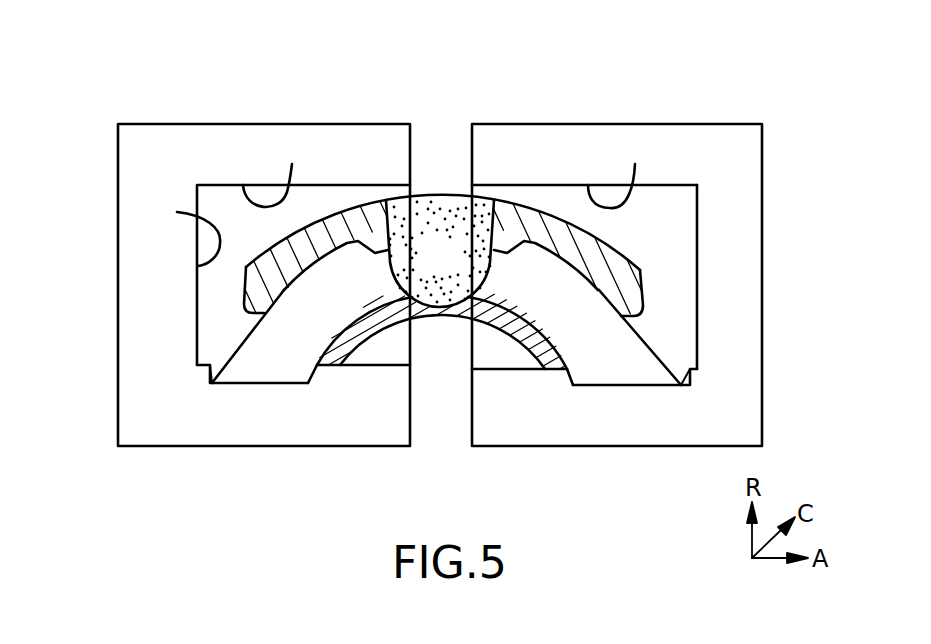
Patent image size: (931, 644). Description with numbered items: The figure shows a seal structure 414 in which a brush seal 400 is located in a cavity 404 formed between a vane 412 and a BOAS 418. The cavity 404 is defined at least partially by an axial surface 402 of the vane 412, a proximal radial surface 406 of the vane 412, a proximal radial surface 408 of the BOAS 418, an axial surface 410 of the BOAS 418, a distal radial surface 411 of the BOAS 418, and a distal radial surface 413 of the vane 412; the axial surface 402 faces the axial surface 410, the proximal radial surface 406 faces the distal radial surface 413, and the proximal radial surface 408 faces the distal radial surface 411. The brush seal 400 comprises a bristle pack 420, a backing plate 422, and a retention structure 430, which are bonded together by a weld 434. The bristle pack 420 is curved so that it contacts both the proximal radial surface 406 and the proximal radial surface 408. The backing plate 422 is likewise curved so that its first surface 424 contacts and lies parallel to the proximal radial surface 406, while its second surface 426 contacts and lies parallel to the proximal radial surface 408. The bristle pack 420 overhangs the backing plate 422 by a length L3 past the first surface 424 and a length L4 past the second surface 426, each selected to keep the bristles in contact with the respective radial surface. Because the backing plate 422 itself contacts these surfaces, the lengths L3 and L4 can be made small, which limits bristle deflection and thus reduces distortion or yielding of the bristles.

The brush seal 400 is at (656, 261).
The axial surface of vane 402 is at (696, 203).
The cavity 404 is at (543, 194).
The proximal radial surface of vane 406 is at (673, 369).
The proximal radial surface of BOAS 408 is at (214, 365).
The axial surface of BOAS 410 is at (181, 232).
The distal radial surface of BOAS 411 is at (274, 173).
The vane 412 is at (637, 432).
The distal radial surface of vane 413 is at (620, 174).
The seal structure 414 is at (141, 79).
The BOAS 418 is at (282, 432).
The bristle pack 420 is at (557, 302).
The backing plate 422 is at (400, 320).
The first surface of backing plate 424 is at (543, 371).
The second surface of backing plate 426 is at (338, 366).
The retention structure 430 is at (365, 229).
The weld 434 is at (459, 262).
The length of bristle pack extending past first surface L3 is at (692, 377).
The length of bristle pack extending past second surface L4 is at (206, 374).